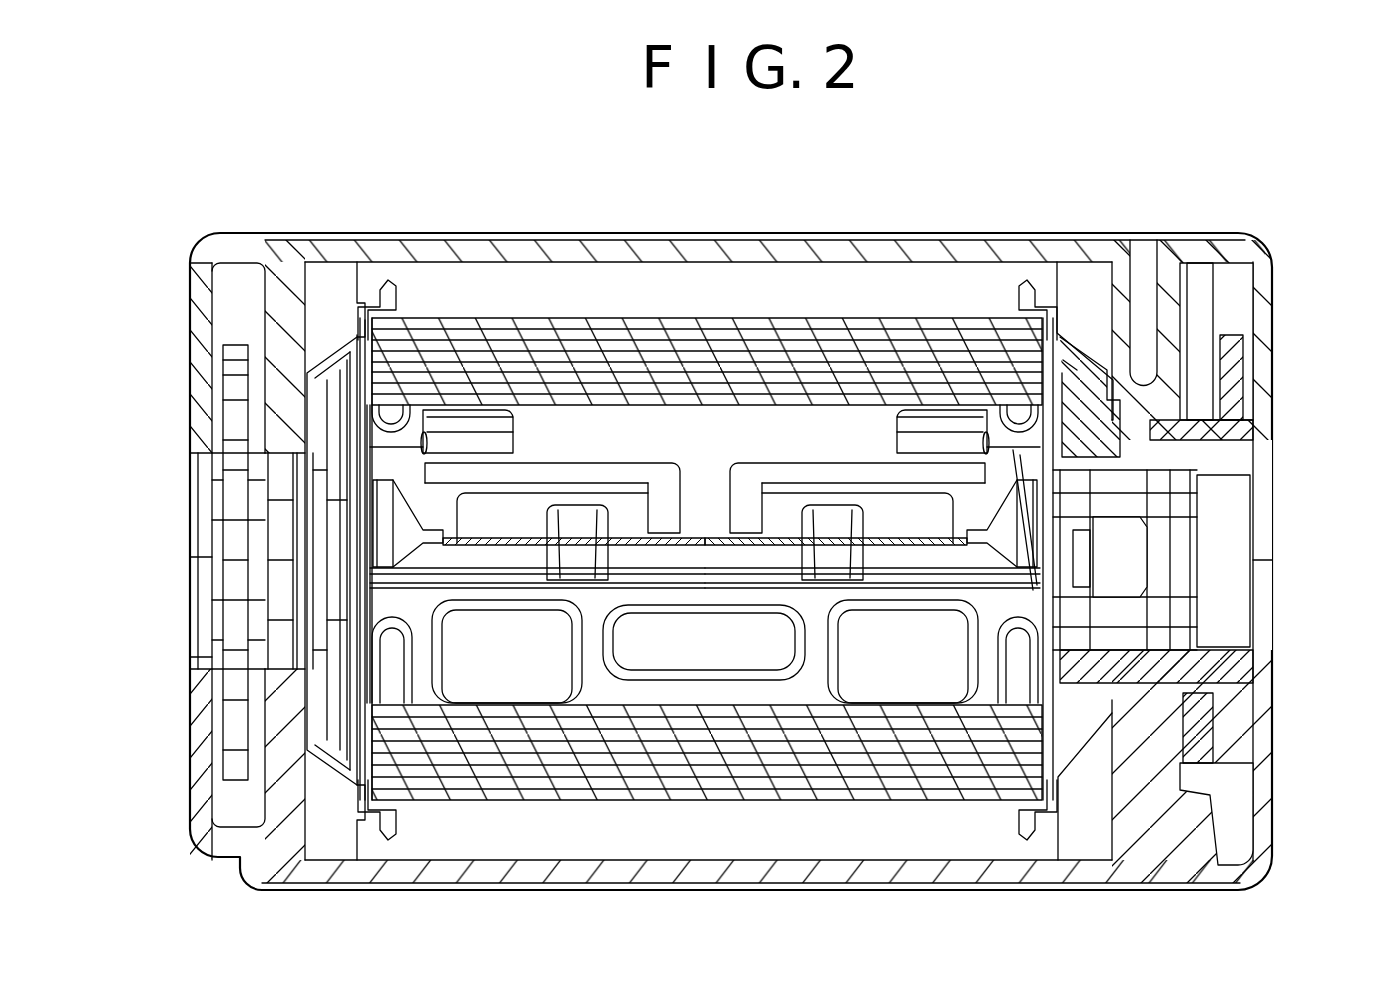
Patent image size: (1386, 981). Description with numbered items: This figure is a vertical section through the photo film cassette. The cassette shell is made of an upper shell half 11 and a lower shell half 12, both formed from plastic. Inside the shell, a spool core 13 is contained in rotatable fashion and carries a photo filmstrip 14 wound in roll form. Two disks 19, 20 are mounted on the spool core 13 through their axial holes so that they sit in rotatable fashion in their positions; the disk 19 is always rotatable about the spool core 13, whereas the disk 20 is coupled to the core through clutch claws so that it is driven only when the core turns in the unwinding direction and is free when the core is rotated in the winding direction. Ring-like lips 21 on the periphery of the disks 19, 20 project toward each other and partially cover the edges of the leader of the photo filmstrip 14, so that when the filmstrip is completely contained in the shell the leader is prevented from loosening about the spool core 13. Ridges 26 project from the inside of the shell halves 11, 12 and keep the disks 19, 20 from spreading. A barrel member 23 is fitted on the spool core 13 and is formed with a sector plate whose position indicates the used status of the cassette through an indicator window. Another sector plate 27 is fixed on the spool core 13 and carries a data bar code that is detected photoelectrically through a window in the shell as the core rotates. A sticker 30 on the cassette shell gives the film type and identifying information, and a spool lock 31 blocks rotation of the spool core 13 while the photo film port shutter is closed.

The upper shell half 11 is at (519, 248).
The lower shell half 12 is at (515, 872).
The spool core 13 is at (607, 466).
The photo filmstrip 14 is at (622, 322).
The disk 19 is at (398, 297).
The disk 20 is at (1017, 298).
The ring-like lips 21 is at (398, 807).
The barrel member 23 is at (1238, 418).
The ridges 26 is at (340, 272).
The sector plate 27 is at (230, 772).
The sticker 30 is at (752, 234).
The spool lock 31 is at (1212, 733).